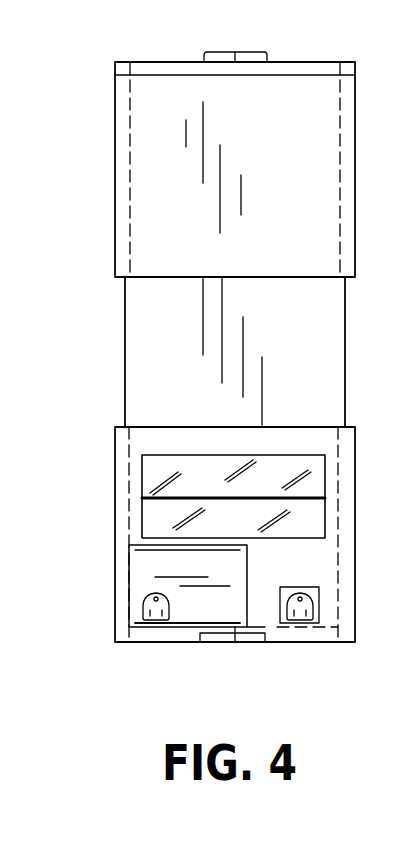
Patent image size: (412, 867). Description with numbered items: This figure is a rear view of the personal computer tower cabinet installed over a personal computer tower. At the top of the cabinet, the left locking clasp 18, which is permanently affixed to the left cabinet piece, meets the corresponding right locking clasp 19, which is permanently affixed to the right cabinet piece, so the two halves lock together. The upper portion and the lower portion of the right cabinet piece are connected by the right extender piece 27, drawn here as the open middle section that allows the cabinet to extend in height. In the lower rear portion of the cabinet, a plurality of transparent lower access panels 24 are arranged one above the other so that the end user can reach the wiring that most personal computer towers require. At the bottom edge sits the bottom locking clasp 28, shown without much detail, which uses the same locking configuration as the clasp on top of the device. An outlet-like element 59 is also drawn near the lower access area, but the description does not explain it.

The left locking clasp 18 is at (253, 52).
The right locking clasp 19 is at (219, 52).
The right extender piece 27 is at (155, 362).
The transparent lower access panels 24 is at (177, 478).
The bottom locking clasp 28 is at (223, 637).
The electrical outlet 59 is at (297, 607).